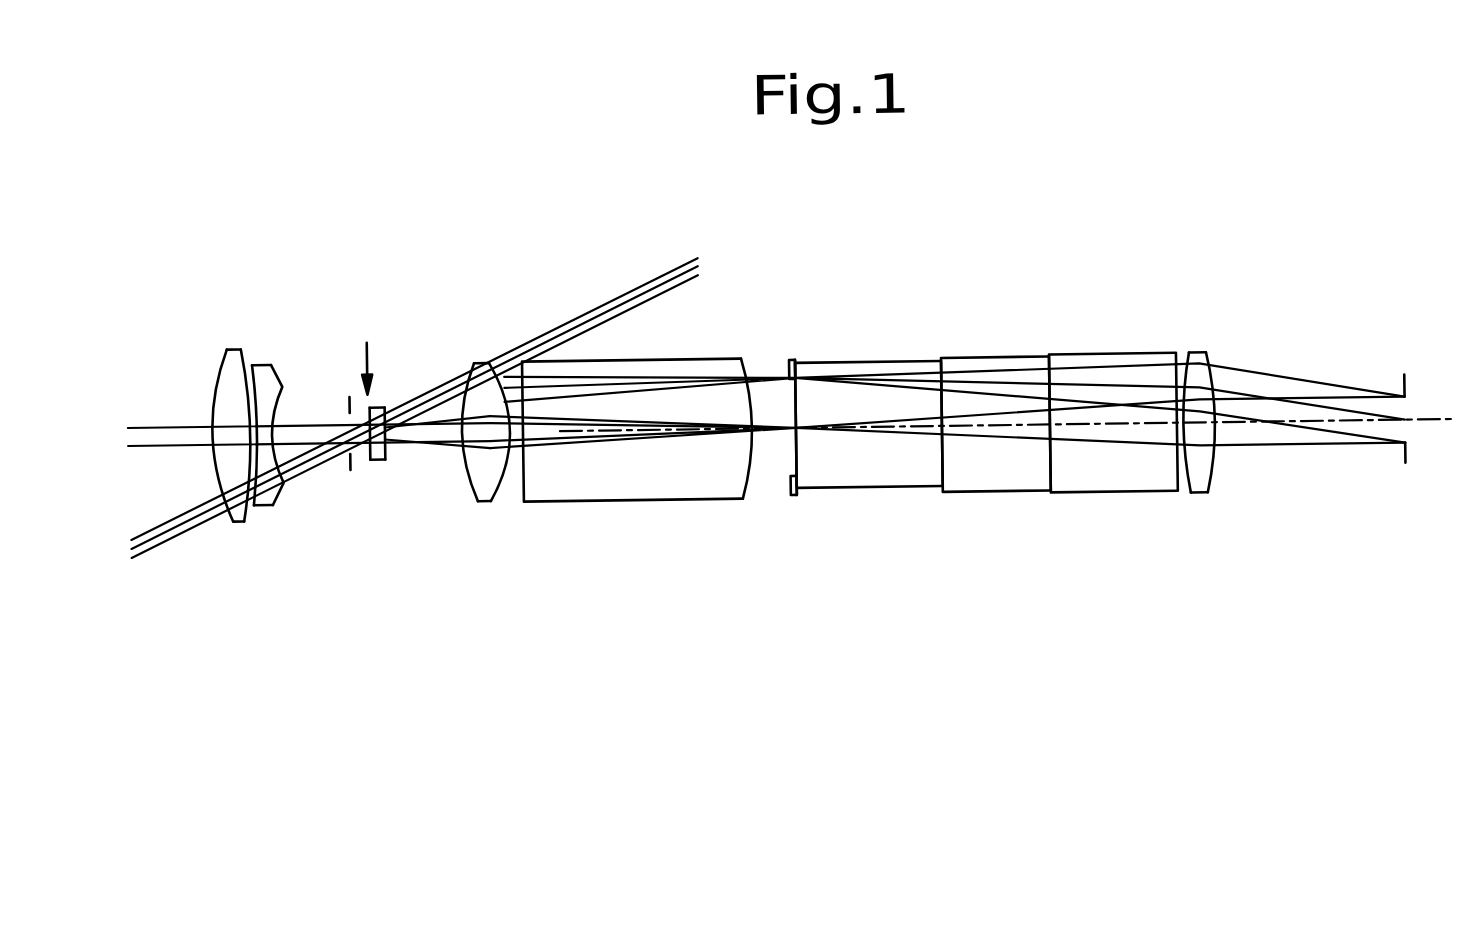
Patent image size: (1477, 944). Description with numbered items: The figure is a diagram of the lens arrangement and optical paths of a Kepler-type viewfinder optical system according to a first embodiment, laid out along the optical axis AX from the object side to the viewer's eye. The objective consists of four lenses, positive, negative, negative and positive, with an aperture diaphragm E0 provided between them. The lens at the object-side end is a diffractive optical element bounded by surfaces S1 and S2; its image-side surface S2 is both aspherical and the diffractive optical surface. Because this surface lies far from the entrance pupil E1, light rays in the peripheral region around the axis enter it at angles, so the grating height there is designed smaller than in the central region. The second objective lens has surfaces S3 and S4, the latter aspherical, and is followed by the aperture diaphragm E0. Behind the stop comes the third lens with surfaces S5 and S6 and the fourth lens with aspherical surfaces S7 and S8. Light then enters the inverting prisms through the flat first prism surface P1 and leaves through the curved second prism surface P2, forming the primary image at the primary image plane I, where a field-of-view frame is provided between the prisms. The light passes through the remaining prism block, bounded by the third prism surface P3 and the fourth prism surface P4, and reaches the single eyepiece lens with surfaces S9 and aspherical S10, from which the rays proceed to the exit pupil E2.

The first lens surface S1 is at (225, 363).
The second lens surface S2 is at (250, 353).
The third lens surface S3 is at (253, 364).
The fourth lens surface S4 is at (283, 394).
The fifth lens surface S5 is at (370, 463).
The sixth lens surface S6 is at (387, 466).
The seventh lens surface S7 is at (463, 495).
The eighth lens surface S8 is at (500, 492).
The ninth lens surface S9 is at (1187, 501).
The tenth lens surface S10 is at (1210, 497).
The aperture diaphragm E0 is at (350, 403).
The entrance pupil E1 is at (370, 363).
The exit pupil E2 is at (1405, 480).
The first prism surface P1 is at (525, 488).
The second prism surface P2 is at (749, 496).
The third prism surface P3 is at (800, 472).
The fourth prism surface P4 is at (1175, 487).
The primary image plane I is at (793, 512).
The optical axis AX is at (1437, 436).